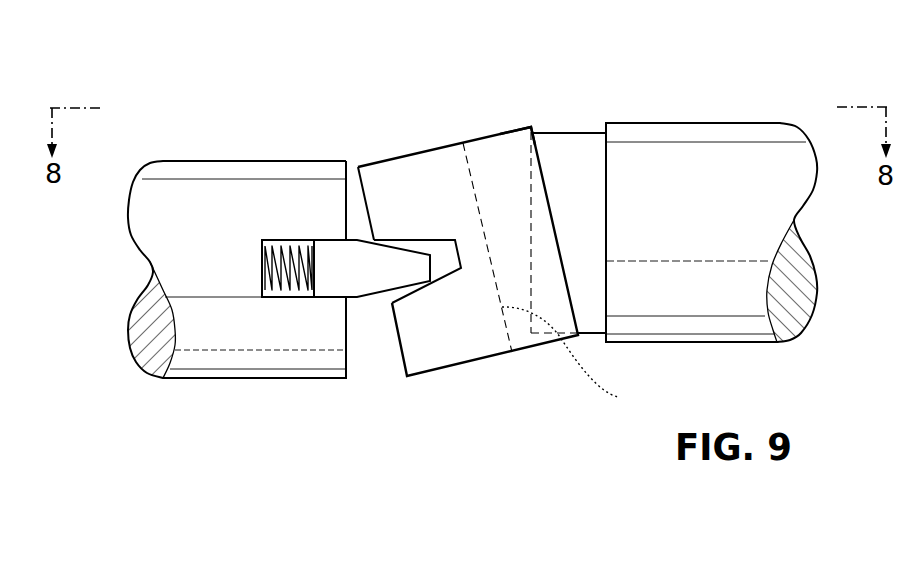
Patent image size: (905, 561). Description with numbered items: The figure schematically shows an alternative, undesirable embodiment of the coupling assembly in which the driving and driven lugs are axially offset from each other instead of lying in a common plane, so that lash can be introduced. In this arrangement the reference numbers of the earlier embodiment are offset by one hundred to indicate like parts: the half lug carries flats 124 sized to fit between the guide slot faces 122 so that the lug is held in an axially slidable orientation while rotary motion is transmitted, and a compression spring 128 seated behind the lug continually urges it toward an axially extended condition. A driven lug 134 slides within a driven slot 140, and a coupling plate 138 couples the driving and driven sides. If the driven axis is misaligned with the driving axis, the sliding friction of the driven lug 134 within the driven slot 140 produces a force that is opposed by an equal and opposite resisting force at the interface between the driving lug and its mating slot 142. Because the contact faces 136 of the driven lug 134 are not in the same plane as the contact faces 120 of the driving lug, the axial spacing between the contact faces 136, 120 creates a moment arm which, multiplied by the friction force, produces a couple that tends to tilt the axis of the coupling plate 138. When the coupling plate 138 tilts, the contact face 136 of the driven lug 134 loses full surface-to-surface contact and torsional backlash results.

The contact faces of driving lug 120 is at (407, 208).
The guide slot faces 122 is at (290, 297).
The flats 124 is at (337, 288).
The compression spring 128 is at (294, 247).
The driven lug 134 is at (575, 133).
The contact faces of driven lug 136 is at (597, 187).
The coupling plate 138 is at (520, 121).
The driven slot 140 is at (581, 357).
The driven slot mating driving lug 142 is at (443, 272).